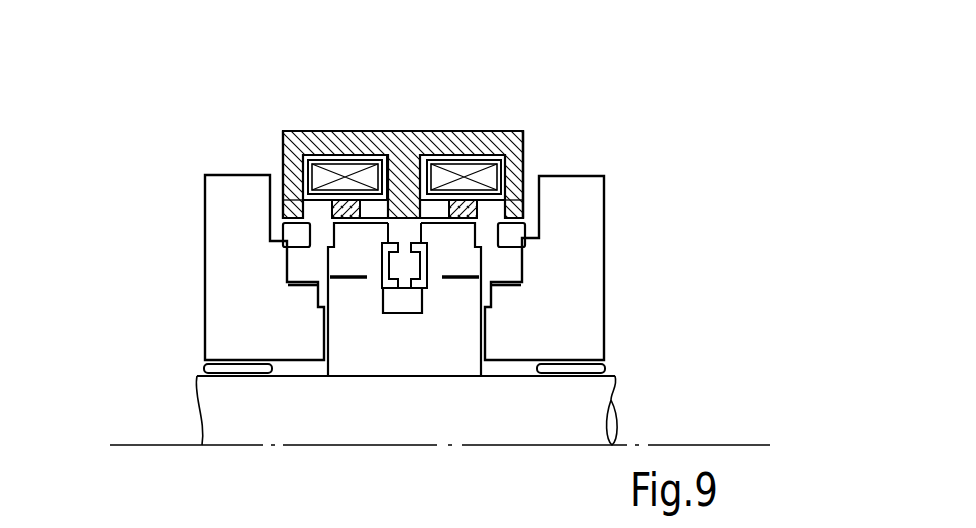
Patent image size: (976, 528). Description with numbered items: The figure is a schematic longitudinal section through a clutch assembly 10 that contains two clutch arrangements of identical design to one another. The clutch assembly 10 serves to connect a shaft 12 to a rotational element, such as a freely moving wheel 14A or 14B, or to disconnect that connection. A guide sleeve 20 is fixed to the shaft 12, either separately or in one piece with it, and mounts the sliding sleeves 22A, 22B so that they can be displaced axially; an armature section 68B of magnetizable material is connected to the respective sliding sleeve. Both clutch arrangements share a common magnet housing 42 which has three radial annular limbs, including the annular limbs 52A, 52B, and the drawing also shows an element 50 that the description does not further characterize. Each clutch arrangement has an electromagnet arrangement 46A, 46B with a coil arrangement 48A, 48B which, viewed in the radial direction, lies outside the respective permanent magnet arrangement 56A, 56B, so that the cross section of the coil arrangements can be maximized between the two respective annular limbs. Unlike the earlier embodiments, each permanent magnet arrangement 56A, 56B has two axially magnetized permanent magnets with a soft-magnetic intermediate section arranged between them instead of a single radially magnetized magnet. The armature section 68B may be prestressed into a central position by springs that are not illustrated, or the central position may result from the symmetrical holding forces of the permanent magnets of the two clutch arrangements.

The clutch assembly 10 is at (600, 106).
The shaft 12 is at (577, 411).
The freely moving wheel 14A is at (220, 273).
The freely moving wheel 14B is at (582, 288).
The guide sleeve 20 is at (411, 352).
The sliding sleeve 22A is at (325, 219).
The sliding sleeve 22B is at (463, 257).
The magnet housing 42 is at (289, 124).
The electromagnet arrangement 46A is at (345, 121).
The electromagnet arrangement 46B is at (511, 108).
The coil arrangement 48A is at (291, 188).
The coil arrangement 48B is at (500, 172).
The top yoke wall 50 is at (321, 148).
The radial annular limb 52A is at (287, 164).
The radial annular limb 52B is at (515, 206).
The permanent magnet arrangement 56A is at (284, 243).
The permanent magnet arrangement 56B is at (524, 242).
The armature section 68B is at (485, 231).